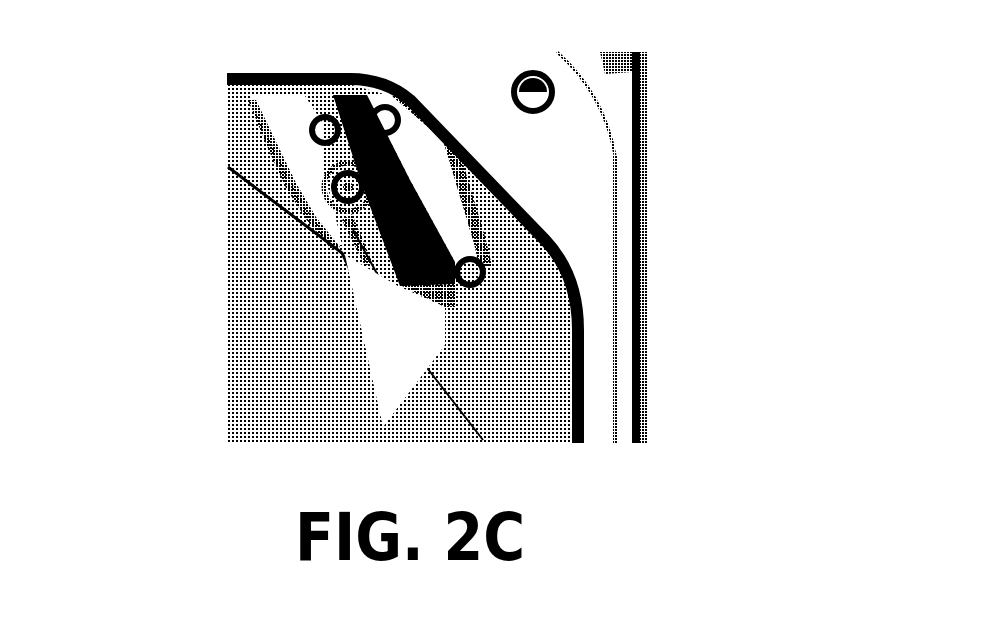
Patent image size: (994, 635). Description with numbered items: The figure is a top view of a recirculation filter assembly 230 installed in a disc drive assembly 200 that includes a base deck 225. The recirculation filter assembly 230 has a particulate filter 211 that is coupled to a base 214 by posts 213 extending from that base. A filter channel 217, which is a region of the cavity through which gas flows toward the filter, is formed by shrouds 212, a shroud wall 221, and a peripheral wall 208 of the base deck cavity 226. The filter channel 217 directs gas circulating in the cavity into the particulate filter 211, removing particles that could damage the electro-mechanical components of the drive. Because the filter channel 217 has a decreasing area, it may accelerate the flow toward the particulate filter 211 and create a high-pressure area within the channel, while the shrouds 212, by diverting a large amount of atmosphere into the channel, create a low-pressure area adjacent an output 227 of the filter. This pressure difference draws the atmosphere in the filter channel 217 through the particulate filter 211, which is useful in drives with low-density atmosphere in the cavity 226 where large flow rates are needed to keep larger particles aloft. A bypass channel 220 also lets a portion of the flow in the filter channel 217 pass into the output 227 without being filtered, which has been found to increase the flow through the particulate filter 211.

The disc drive assembly 200 is at (712, 61).
The peripheral wall 208 is at (573, 392).
The particulate filter 211 is at (383, 207).
The shrouds 212 is at (392, 390).
The posts 213 is at (325, 130).
The base 214 is at (467, 308).
The filter channel 217 is at (520, 347).
The bypass channel 220 is at (373, 77).
The shroud wall 221 is at (365, 260).
The base deck 225 is at (460, 78).
The base deck cavity 226 is at (292, 408).
The output 227 is at (315, 160).
The recirculation filter assembly 230 is at (263, 122).